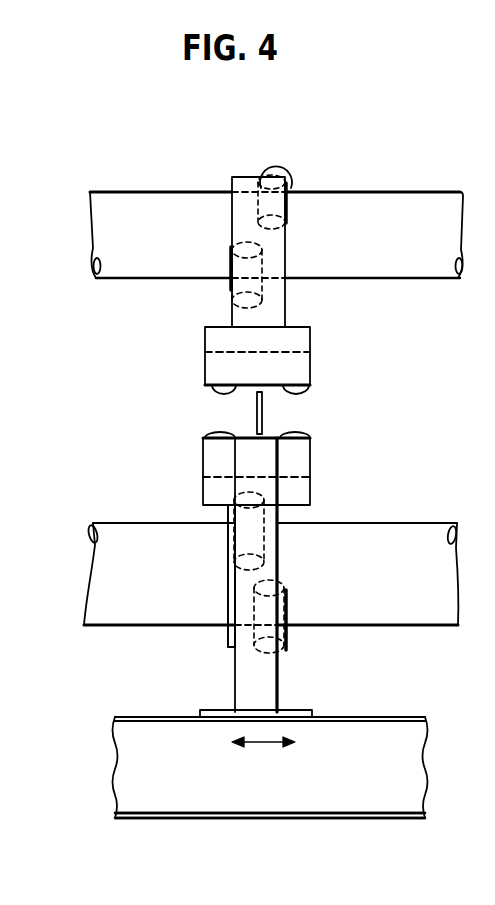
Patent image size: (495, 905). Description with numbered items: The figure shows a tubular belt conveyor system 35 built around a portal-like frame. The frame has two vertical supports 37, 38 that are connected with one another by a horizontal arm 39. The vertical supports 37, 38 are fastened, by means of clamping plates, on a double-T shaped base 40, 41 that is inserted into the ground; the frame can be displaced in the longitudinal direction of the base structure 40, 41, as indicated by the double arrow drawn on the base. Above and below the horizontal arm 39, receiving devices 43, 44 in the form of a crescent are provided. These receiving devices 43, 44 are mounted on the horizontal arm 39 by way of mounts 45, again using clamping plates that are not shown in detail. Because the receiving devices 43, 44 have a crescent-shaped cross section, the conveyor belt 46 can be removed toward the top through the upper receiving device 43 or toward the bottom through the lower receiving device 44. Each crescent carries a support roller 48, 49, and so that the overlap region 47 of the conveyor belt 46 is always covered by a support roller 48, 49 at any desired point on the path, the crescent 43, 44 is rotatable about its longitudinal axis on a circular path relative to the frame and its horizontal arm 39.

The tubular belt conveyor system 35 is at (98, 148).
The vertical support 37 is at (247, 683).
The vertical support 38 is at (231, 576).
The horizontal arm 39 is at (263, 414).
The double-T shaped base 40 is at (255, 803).
The double-T shaped base 41 is at (270, 767).
The receiving device 43 is at (278, 263).
The receiving device 44 is at (272, 561).
The mount 45 is at (215, 344).
The conveyor belt 46 is at (178, 262).
The overlap region 47 is at (207, 191).
The support roller 48 is at (283, 165).
The support roller 49 is at (281, 645).